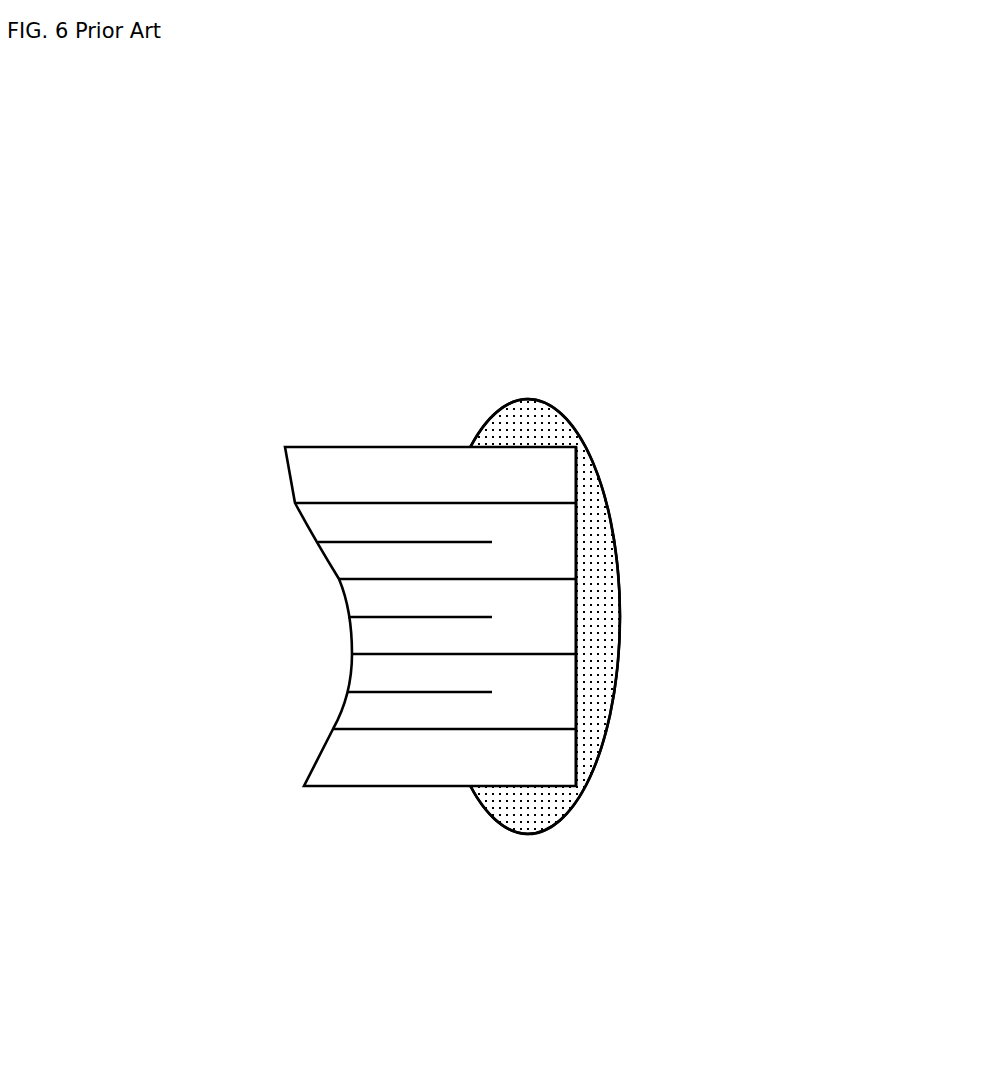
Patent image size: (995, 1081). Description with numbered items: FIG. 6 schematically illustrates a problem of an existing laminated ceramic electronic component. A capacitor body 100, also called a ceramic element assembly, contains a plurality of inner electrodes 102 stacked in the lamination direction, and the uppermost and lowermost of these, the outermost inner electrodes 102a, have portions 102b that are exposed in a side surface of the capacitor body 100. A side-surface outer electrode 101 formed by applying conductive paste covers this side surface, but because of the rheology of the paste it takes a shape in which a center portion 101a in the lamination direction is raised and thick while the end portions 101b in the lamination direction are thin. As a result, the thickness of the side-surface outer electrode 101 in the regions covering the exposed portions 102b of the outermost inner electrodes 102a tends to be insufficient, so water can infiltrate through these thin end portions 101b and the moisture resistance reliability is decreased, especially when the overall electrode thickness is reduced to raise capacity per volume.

The capacitor body 100 is at (319, 440).
The side-surface outer electrode 101 is at (640, 557).
The center portion 101a is at (619, 615).
The end portions 101b is at (593, 458).
The inner electrodes 102 is at (433, 579).
The outermost inner electrodes 102a is at (437, 503).
The portions of outermost inner electrodes 102b is at (577, 500).